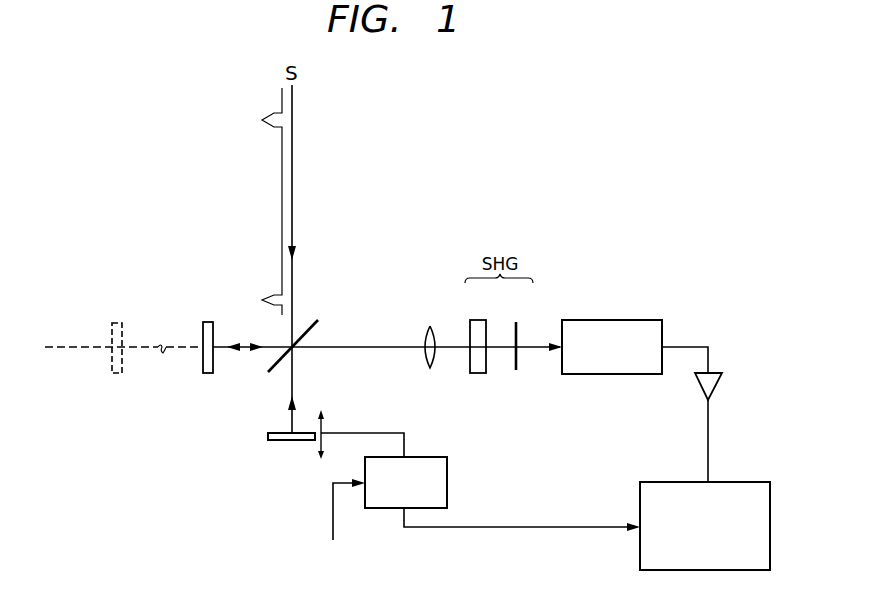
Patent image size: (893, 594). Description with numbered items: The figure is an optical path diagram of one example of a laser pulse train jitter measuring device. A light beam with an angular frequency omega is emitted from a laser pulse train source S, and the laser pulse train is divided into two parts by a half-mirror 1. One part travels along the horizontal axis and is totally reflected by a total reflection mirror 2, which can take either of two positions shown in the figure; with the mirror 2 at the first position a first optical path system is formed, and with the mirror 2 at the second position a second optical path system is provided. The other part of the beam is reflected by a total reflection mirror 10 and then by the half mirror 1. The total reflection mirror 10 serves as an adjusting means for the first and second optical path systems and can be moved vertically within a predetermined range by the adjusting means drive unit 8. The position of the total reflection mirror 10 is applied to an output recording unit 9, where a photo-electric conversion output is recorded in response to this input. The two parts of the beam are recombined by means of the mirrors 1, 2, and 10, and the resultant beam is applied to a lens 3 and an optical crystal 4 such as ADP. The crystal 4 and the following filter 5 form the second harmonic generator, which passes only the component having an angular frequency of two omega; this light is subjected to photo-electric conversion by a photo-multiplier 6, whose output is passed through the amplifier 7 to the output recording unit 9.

The half-mirror 1 is at (302, 332).
The total reflection mirror 2 is at (93, 372).
The lens 3 is at (432, 326).
The optical crystal 4 is at (486, 322).
The filter 5 is at (518, 322).
The photo-multiplier 6 is at (646, 320).
The amplifier 7 is at (724, 379).
The adjusting means drive unit 8 is at (435, 455).
The output recording unit 9 is at (755, 482).
The total reflection mirror 10 is at (283, 440).